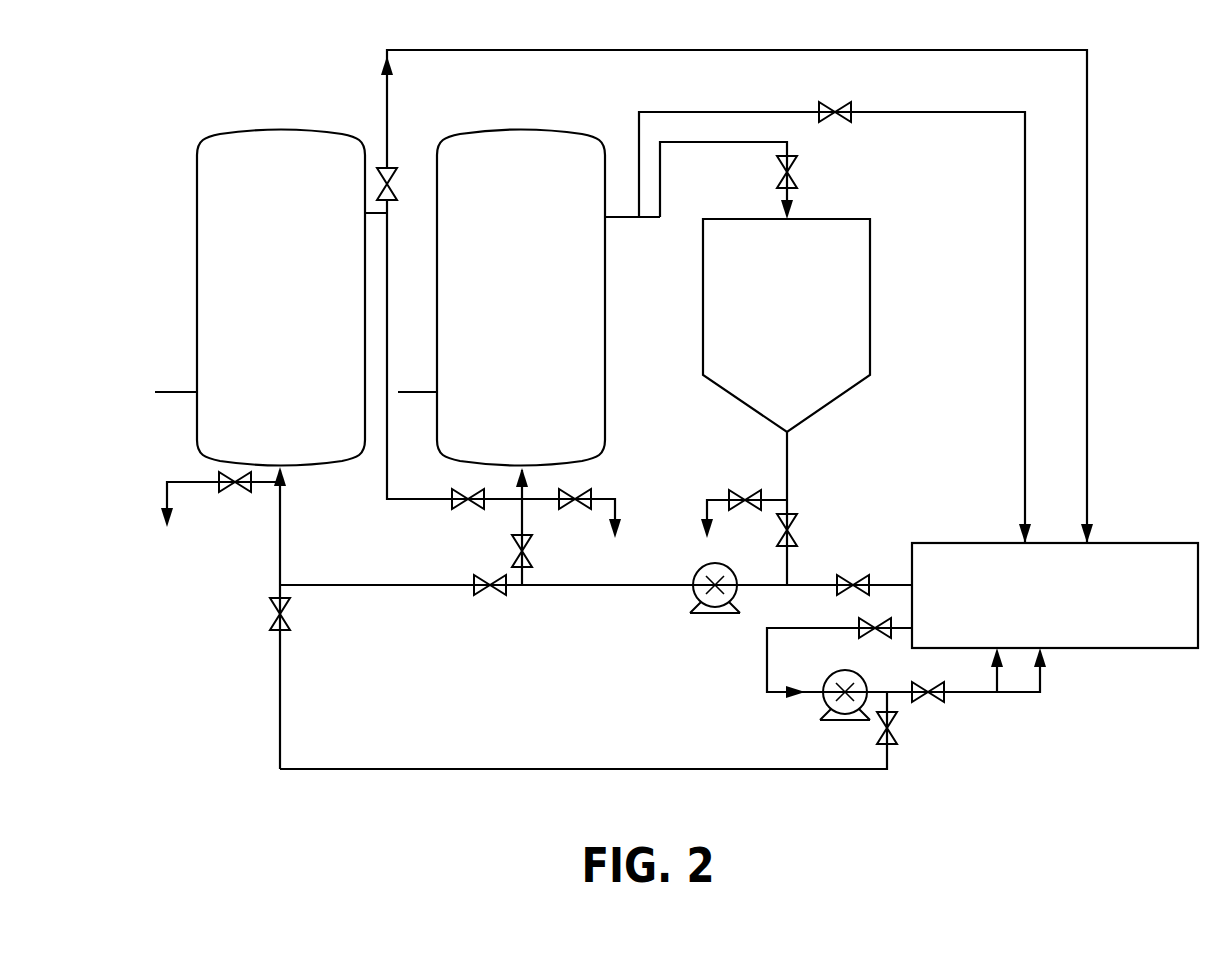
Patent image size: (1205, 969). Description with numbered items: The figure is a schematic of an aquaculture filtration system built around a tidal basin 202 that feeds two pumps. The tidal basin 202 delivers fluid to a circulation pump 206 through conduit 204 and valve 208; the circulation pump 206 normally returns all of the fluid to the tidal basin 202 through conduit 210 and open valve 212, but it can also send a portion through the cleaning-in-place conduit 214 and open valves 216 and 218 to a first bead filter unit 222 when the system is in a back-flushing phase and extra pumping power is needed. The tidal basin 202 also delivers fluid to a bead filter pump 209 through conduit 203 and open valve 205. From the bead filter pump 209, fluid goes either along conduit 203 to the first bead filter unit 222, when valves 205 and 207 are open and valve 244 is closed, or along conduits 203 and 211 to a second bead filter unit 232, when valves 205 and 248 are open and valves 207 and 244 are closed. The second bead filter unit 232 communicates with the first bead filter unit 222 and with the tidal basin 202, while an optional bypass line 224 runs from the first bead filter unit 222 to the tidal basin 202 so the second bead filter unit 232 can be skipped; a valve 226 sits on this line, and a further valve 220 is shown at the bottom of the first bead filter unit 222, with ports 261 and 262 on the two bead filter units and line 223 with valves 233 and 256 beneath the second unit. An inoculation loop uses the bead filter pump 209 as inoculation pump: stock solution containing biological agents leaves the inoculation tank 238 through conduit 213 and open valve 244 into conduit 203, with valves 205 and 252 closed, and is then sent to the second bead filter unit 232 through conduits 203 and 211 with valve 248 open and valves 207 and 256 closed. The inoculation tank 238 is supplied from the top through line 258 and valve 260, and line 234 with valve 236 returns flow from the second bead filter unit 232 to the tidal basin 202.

The tidal basin 202 is at (1050, 611).
The conduit 203 is at (590, 588).
The conduit 204 is at (767, 655).
The valve 205 is at (845, 575).
The circulation pump 206 is at (840, 670).
The valve 207 is at (485, 598).
The valve 208 is at (875, 640).
The bead filter pump 209 is at (695, 575).
The conduit 210 is at (985, 695).
The conduit 211 is at (527, 512).
The valve 212 is at (930, 700).
The conduit 213 is at (788, 480).
The cleaning-in-place conduit 214 is at (730, 773).
The valve 216 is at (893, 720).
The valve 218 is at (297, 602).
The drain valve 220 is at (247, 495).
The first bead filter unit 222 is at (260, 304).
The line 223 is at (381, 498).
The bypass line 224 is at (500, 48).
The valve 226 is at (394, 193).
The second bead filter unit 232 is at (503, 304).
The valve 233 is at (462, 515).
The line 234 is at (733, 110).
The valve 236 is at (827, 105).
The inoculation tank 238 is at (770, 304).
The valve 244 is at (792, 520).
The valve 248 is at (512, 560).
The valve 252 is at (753, 493).
The valve 256 is at (575, 490).
The line 258 is at (685, 143).
The valve 260 is at (793, 182).
The port 261 is at (180, 390).
The port 262 is at (420, 388).